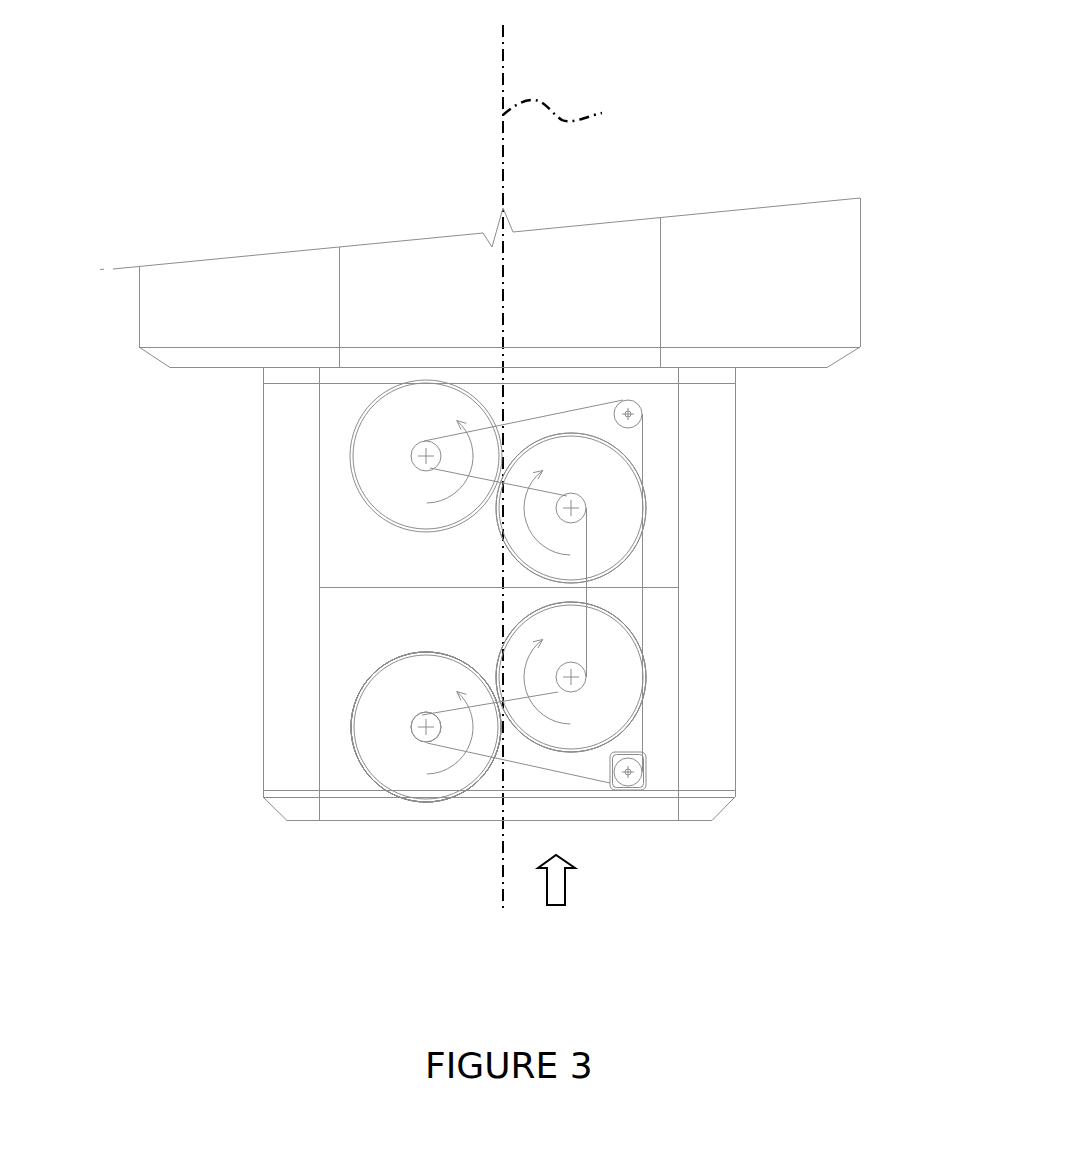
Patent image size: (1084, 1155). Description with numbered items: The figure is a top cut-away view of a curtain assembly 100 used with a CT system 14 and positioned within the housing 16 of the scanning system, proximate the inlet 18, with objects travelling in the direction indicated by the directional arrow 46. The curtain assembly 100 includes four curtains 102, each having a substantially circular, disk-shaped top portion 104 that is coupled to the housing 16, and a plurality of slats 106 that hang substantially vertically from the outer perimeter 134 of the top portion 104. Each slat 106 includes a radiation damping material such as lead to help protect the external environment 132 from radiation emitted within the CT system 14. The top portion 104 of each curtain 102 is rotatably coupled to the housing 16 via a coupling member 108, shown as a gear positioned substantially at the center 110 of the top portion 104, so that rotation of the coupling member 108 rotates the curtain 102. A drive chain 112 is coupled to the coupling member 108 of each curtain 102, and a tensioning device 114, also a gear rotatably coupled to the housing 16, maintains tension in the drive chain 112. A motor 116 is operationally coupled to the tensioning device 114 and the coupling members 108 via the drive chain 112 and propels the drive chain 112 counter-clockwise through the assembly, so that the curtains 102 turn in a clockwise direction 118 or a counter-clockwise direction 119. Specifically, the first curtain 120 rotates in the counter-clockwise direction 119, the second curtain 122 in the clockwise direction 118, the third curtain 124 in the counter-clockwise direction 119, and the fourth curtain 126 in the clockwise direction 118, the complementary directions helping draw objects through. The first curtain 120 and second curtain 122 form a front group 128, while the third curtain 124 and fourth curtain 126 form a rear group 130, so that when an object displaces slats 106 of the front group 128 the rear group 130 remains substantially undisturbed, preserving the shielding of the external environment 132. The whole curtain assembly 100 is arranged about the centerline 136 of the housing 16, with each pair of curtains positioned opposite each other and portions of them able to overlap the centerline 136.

The CT system 14 is at (447, 2).
The housing 16 is at (267, 402).
The inlet 18 is at (440, 882).
The directional arrow 46 is at (556, 897).
The curtain assembly 100 is at (759, 455).
The curtain 102 is at (647, 500).
The top portion 104 is at (384, 700).
The slat 106 is at (353, 748).
The coupling member 108 is at (410, 734).
The center 110 is at (424, 741).
The drive chain 112 is at (647, 737).
The tensioning device 114 is at (640, 407).
The motor 116 is at (647, 778).
The clockwise direction 118 is at (552, 718).
The counter-clockwise direction 119 is at (442, 778).
The first curtain 120 is at (351, 718).
The second curtain 122 is at (648, 667).
The third curtain 124 is at (352, 452).
The fourth curtain 126 is at (647, 518).
The front group 128 is at (558, 785).
The rear group 130 is at (465, 543).
The external environment 132 is at (778, 958).
The outer perimeter 134 is at (382, 676).
The centerline 136 is at (574, 114).